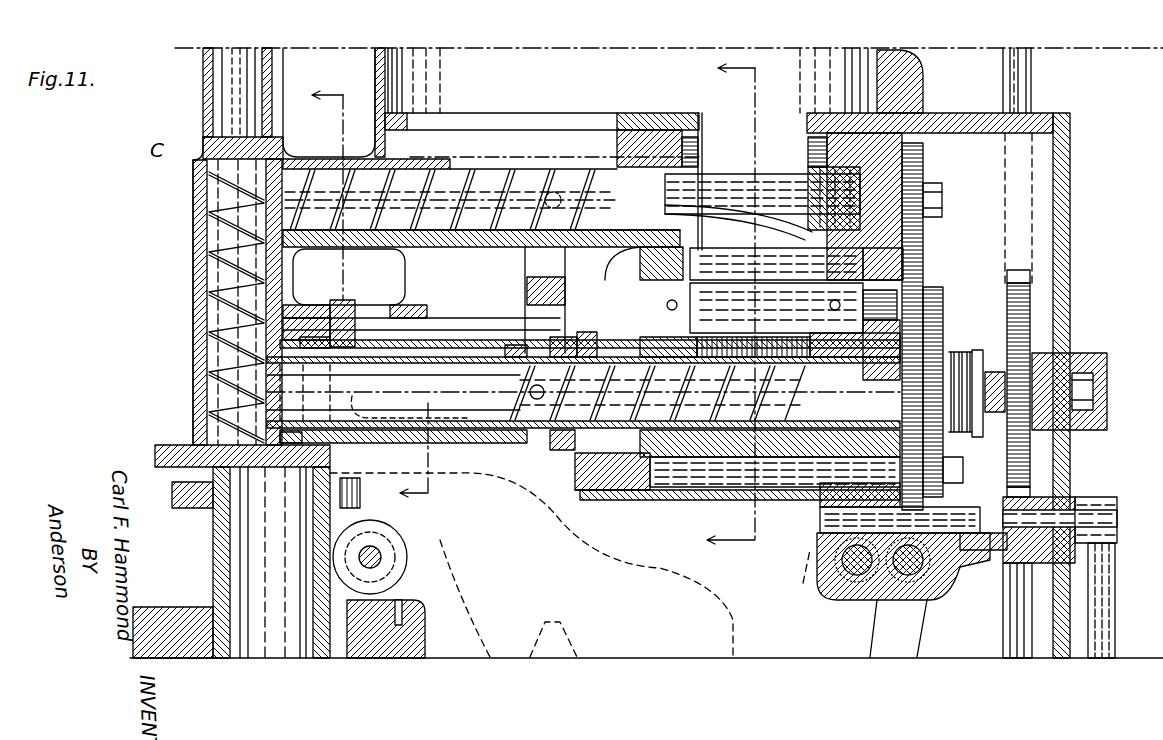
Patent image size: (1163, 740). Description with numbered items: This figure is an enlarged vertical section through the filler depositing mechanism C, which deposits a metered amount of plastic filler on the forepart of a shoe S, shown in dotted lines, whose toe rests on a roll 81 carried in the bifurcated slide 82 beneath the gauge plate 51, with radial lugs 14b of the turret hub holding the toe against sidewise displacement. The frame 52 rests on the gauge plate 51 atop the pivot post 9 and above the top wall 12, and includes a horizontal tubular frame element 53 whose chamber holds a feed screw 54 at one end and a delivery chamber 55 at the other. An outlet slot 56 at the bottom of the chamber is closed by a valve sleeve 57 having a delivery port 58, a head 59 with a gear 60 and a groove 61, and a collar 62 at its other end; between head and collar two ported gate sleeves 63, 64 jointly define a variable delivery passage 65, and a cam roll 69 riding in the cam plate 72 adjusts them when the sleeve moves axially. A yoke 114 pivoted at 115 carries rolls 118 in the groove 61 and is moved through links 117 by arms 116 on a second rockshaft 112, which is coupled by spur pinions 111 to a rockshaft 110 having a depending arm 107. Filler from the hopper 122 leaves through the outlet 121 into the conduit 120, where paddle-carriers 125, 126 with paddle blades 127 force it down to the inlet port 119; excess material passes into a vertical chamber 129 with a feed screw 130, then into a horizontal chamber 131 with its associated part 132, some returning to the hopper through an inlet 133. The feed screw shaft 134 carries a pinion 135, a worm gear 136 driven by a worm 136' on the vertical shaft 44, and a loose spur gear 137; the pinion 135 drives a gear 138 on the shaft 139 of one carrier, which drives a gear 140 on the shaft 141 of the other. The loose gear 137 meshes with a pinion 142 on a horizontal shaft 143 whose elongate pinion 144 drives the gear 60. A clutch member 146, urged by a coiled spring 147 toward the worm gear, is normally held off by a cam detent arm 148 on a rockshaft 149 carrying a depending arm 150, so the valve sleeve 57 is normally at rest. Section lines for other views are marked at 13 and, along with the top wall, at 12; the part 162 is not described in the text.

The pivot post 9 is at (271, 562).
The top wall 12 is at (723, 313).
The section line 13- 13 is at (355, 294).
The radial lugs 14b is at (360, 502).
The vertical shaft 44 is at (1033, 95).
The gauge plate 51 is at (170, 445).
The frame 52 is at (193, 197).
The tubular frame element 53 is at (505, 365).
The feed screw 54 is at (723, 467).
The delivery chamber 55 is at (450, 392).
The outlet slot 56 is at (410, 406).
The valve sleeve 57 is at (435, 440).
The delivery port 58 is at (477, 353).
The head 59 is at (565, 337).
The gear 60 is at (593, 330).
The circumferential groove 61 is at (541, 443).
The collar 62 is at (280, 450).
The gate sleeve 63 is at (450, 337).
The gate sleeve 64 is at (430, 340).
The delivery passage 65 is at (416, 449).
The cam roll 69 is at (355, 300).
The cam plate 72 is at (397, 307).
The roll 81 is at (410, 557).
The slide 82 is at (397, 597).
The arm 107 is at (918, 642).
The rockshaft 110 is at (915, 572).
The spur pinions 111 is at (903, 607).
The second rockshaft 112 is at (860, 575).
The yoke 114 is at (563, 260).
The pivot 115 is at (557, 203).
The arm 116 is at (809, 600).
The link 117 is at (658, 500).
The rolls 118 is at (540, 440).
The inlet port 119 is at (777, 372).
The conduit 120 is at (798, 149).
The outlet 121 is at (810, 113).
The hopper 122 is at (820, 67).
The paddle-carrier 125 is at (811, 198).
The paddle-carrier 126 is at (782, 308).
The paddle blade 127 is at (764, 227).
The vertical cylindrical chamber 129 is at (217, 323).
The feed screw 130 is at (217, 293).
The horizontal cylindrical chamber 131 is at (428, 168).
The tube wall 132 is at (483, 165).
The inlet 133 is at (528, 130).
The shaft 134 is at (750, 455).
The pinion 135 is at (813, 278).
The worm gear 136 is at (1064, 383).
The worm 136' is at (1079, 377).
The spur gear 137 is at (937, 320).
The gear 138 is at (927, 281).
The shaft 139 is at (927, 263).
The gear 140 is at (923, 164).
The shaft 141 is at (897, 192).
The pinion 142 is at (940, 540).
The horizontal shaft 143 is at (757, 500).
The elongate pinion 144 is at (622, 487).
The clutch member 146 is at (977, 352).
The coiled spring 147 is at (983, 350).
The cam detent arm 148 is at (1037, 483).
The rockshaft 149 is at (1043, 567).
The depending arm 150 is at (1103, 643).
The rod 162 is at (242, 72).
The filler depositing mechanism C is at (321, 103).
The shoe S is at (737, 620).